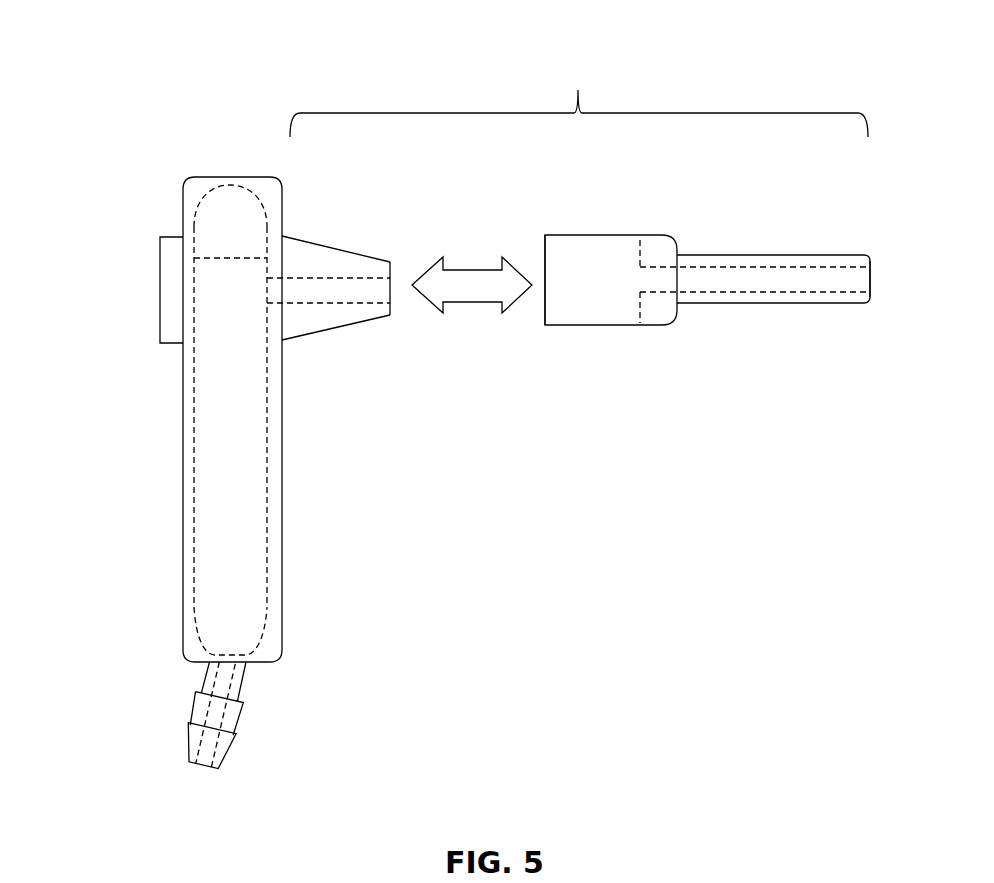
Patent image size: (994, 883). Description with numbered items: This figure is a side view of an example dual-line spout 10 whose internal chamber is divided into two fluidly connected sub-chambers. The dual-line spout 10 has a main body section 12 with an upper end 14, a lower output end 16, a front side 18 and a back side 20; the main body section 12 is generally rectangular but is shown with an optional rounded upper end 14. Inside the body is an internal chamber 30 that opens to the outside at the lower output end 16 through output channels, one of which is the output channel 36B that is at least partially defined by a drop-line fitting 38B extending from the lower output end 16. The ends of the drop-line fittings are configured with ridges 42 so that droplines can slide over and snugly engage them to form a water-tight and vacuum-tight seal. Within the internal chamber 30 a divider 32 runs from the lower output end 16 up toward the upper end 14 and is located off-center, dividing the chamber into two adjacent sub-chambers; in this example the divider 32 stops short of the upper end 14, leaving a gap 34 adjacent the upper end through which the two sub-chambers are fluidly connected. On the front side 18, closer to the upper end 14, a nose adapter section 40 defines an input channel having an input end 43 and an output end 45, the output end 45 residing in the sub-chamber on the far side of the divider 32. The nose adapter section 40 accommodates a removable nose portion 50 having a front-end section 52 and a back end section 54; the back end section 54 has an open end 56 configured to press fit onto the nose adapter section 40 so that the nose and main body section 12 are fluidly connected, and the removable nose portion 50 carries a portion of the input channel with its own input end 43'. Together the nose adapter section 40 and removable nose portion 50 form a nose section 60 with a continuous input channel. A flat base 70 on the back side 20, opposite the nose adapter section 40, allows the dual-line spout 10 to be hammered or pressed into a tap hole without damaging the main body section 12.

The dual-line spout 10 is at (263, 84).
The main body section 12 is at (150, 421).
The upper end 14 is at (228, 177).
The lower output end 16 is at (262, 663).
The front side 18 is at (282, 425).
The back side 20 is at (183, 507).
The internal chamber 30 is at (243, 350).
The divider 32 is at (218, 281).
The gap 34 is at (210, 220).
The output channel 36B is at (170, 712).
The drop-line fitting 38B is at (223, 713).
The nose adapter section 40 is at (332, 248).
The ridges 42 is at (207, 399).
The input end 43 is at (413, 315).
The input end 43' is at (904, 260).
The output end 45 is at (262, 295).
The removable nose portion 50 is at (746, 190).
The front-end section 52 is at (800, 234).
The back end section 54 is at (604, 210).
The open end 56 is at (542, 318).
The nose section 60 is at (579, 95).
The flat base 70 is at (157, 268).